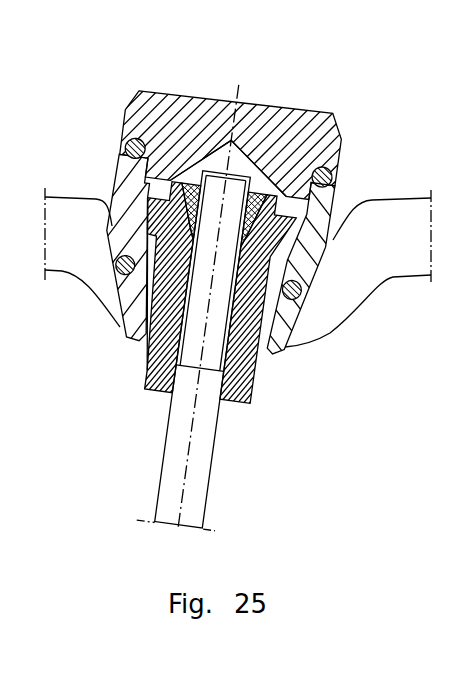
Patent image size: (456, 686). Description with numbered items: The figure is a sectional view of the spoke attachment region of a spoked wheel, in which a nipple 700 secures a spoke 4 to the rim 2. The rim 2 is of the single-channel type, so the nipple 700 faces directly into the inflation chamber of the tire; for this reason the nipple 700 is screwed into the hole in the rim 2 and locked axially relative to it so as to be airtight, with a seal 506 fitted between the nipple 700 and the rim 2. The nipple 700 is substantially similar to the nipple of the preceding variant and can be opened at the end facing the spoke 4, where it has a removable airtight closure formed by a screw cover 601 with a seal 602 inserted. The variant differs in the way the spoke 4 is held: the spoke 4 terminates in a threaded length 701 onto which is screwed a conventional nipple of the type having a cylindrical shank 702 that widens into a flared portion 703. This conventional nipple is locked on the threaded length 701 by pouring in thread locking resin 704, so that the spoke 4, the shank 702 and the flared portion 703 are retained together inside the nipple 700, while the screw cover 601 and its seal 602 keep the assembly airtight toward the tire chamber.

The nipple 700 is at (200, 76).
The screw cover 601 is at (289, 120).
The seal 602 is at (336, 172).
The thread locking resin 704 is at (190, 168).
The flared portion 703 is at (322, 266).
The seal 506 is at (123, 283).
The cylindrical shank 702 is at (251, 390).
The threaded length 701 is at (197, 340).
The spoke 4 is at (193, 494).
The rim 2 is at (327, 313).